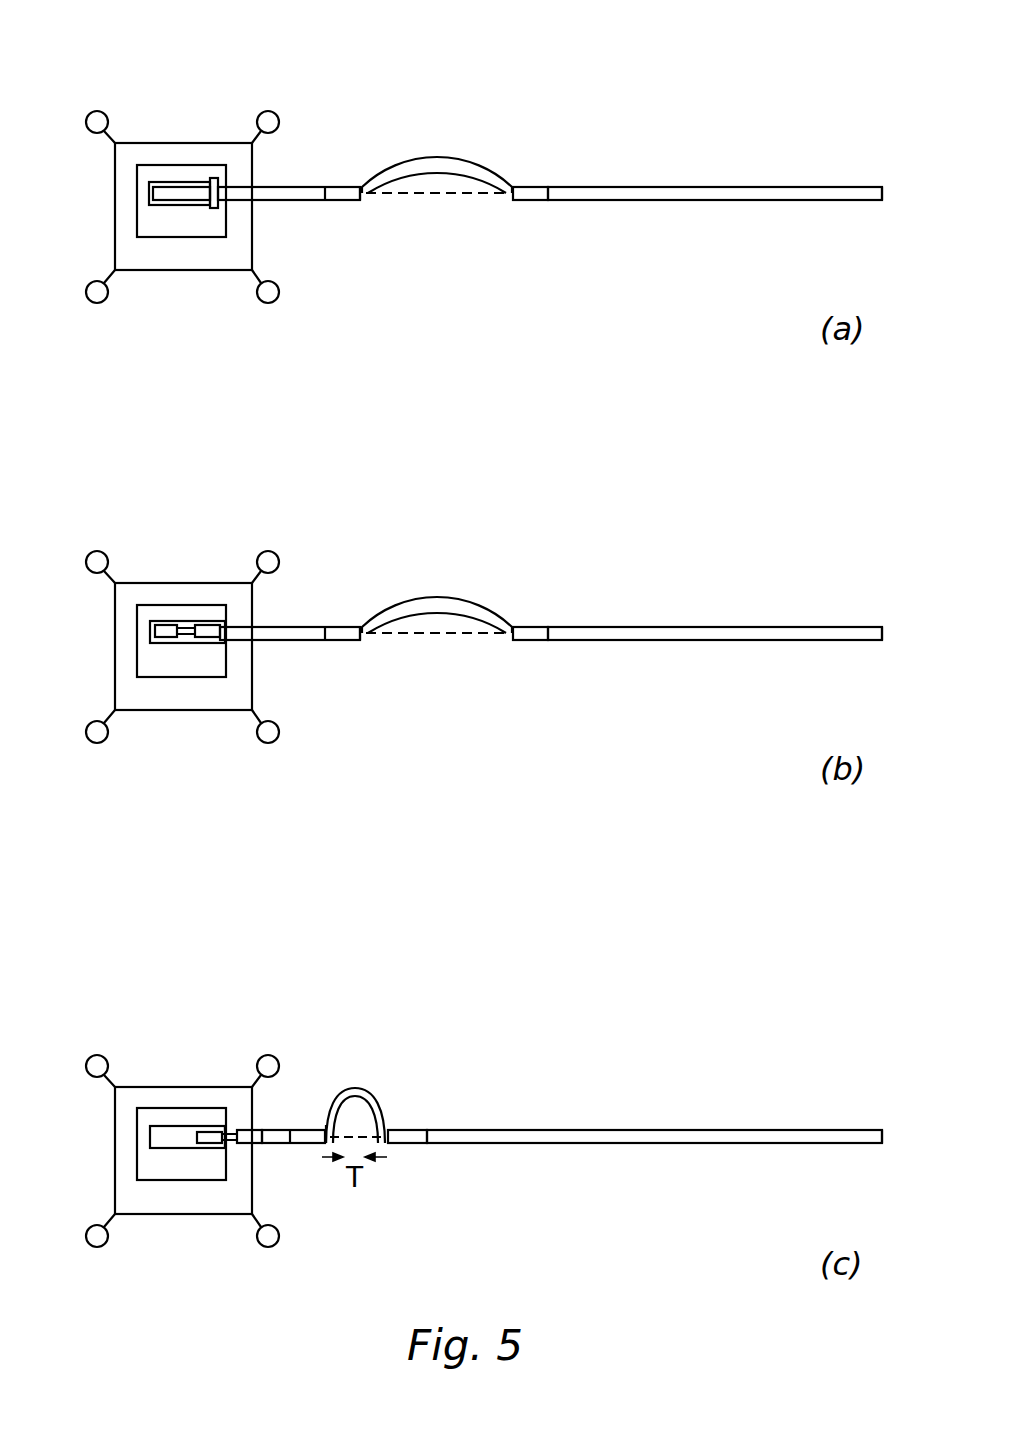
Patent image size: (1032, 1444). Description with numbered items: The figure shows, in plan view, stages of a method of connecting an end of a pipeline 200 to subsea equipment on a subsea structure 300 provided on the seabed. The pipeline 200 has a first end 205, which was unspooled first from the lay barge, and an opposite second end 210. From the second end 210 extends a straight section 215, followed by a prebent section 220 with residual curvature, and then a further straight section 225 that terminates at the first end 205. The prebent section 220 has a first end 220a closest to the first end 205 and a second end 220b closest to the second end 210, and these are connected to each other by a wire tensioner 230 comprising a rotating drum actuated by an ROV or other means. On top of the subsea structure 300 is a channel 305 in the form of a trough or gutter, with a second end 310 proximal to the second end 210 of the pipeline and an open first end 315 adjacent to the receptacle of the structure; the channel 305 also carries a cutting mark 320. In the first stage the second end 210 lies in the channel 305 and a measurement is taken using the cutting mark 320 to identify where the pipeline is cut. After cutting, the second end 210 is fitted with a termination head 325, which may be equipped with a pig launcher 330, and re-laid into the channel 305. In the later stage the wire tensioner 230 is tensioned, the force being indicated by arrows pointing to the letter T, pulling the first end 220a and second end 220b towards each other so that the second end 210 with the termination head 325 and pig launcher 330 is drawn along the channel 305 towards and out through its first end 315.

The pipeline 200 is at (557, 223).
The first end 205 is at (878, 187).
The second end 210 is at (148, 192).
The straight section 215 is at (294, 187).
The prebent section 220 is at (440, 165).
The first end of prebent section 220a is at (508, 200).
The second end of prebent section 220b is at (368, 200).
The further straight section 225 is at (675, 187).
The wire tensioner 230 is at (435, 195).
The subsea structure 300 is at (186, 128).
The channel 305 is at (178, 222).
The second end of channel 310 is at (145, 183).
The first end of channel 315 is at (228, 203).
The cutting mark 320 is at (213, 180).
The termination head 325 is at (208, 625).
The pig launcher 330 is at (155, 632).